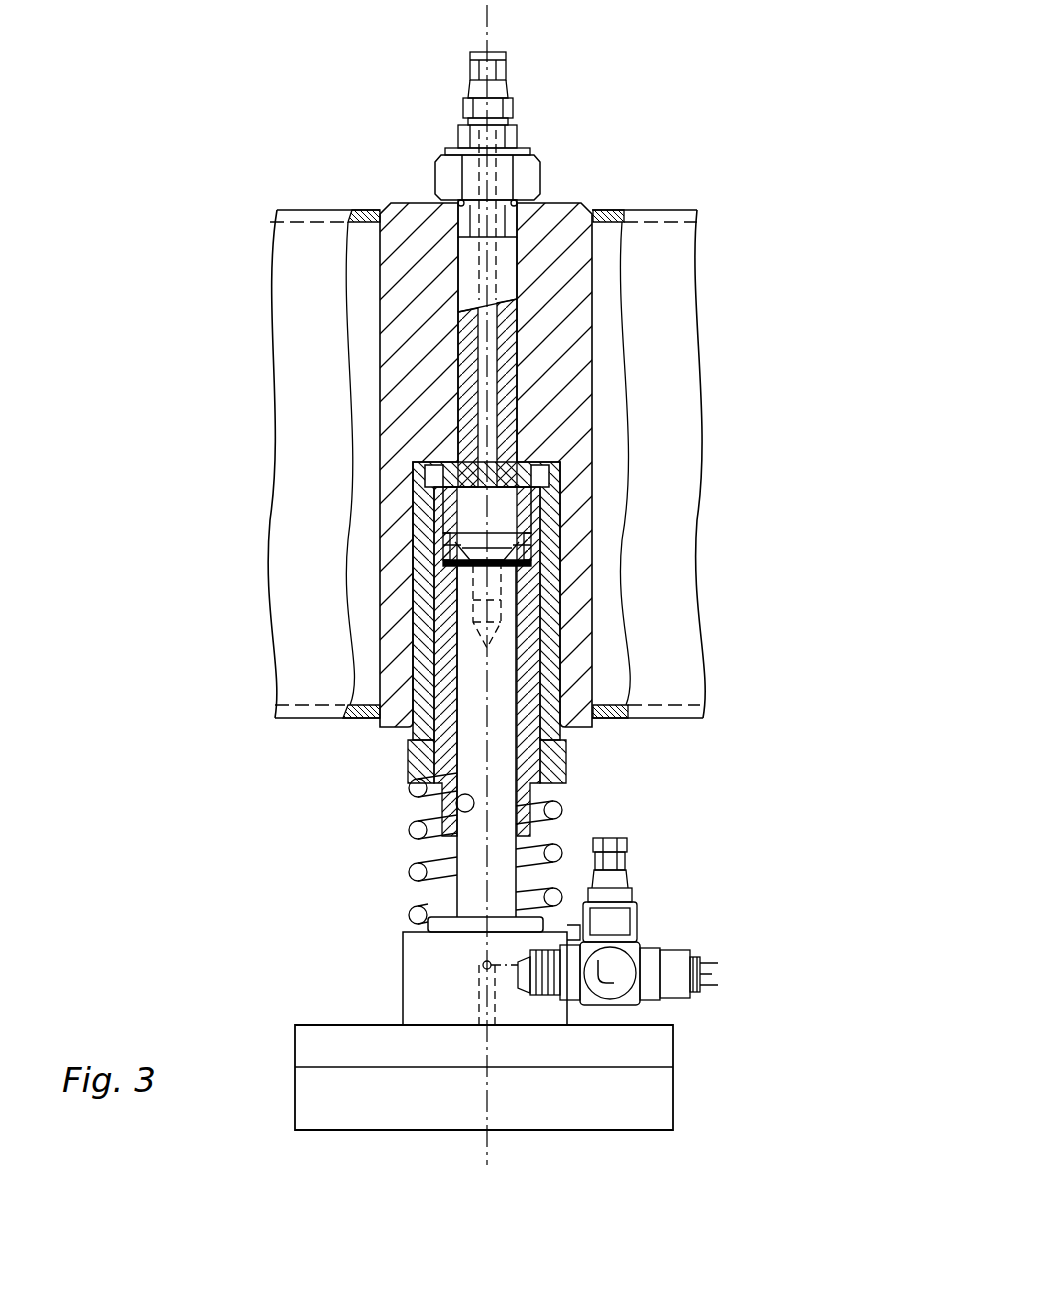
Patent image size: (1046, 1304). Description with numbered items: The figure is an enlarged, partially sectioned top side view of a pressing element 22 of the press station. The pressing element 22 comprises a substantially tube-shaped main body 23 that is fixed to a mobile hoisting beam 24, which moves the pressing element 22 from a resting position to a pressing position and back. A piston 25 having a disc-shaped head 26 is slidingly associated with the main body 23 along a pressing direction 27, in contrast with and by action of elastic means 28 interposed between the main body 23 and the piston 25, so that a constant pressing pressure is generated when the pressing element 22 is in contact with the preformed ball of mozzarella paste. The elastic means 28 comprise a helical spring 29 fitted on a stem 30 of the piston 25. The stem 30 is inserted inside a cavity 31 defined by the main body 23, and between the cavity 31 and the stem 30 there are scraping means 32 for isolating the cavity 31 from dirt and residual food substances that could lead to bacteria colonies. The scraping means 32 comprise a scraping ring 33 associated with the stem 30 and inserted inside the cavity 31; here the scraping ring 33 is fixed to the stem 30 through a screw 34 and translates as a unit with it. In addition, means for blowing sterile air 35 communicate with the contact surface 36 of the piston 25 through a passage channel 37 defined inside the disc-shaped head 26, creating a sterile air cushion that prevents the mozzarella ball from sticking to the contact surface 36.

The pressing element 22 is at (183, 158).
The main body 23 is at (562, 262).
The hoisting beam 24 is at (660, 268).
The piston 25 is at (452, 887).
The disc-shaped head 26 is at (638, 1045).
The pressing direction 27 is at (488, 14).
The elastic means 28 is at (484, 848).
The helical spring 29 is at (410, 875).
The stem 30 is at (500, 750).
The cavity 31 is at (452, 806).
The scraping means 32 is at (540, 545).
The scraping ring 33 is at (438, 552).
The screw 34 is at (510, 607).
The means for blowing sterile air 35 is at (660, 945).
The contact surface 36 is at (648, 1132).
The passage channel 37 is at (468, 1048).